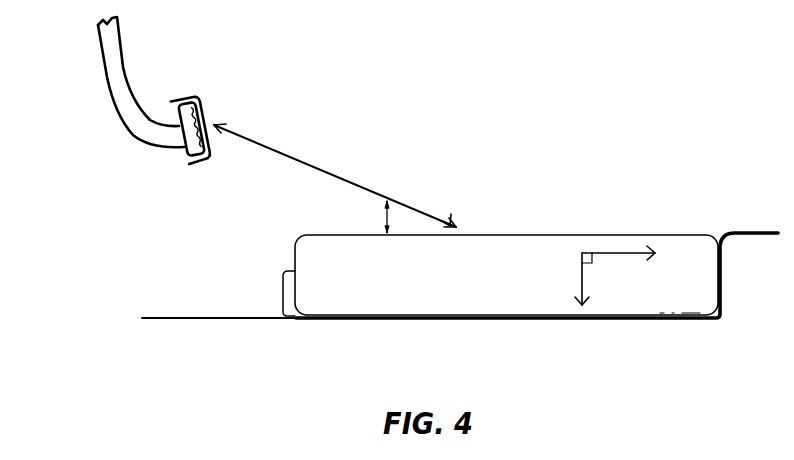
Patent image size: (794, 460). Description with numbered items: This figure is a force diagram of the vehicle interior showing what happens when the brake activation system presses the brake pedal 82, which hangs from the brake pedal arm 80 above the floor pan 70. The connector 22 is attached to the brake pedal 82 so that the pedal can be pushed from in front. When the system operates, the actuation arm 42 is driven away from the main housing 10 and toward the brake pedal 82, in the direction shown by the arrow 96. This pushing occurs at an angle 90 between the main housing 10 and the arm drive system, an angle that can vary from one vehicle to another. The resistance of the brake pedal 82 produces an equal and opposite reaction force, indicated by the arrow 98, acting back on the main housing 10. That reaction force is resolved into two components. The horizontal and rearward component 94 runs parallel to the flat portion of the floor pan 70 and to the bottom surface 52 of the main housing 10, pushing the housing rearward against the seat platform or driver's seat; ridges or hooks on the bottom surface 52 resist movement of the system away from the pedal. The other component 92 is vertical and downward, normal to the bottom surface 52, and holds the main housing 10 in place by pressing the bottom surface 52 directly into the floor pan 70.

The main housing 10 is at (693, 235).
The connector 22 is at (170, 98).
The actuation arm 42 is at (321, 168).
The bottom surface 52 is at (317, 320).
The floor pan 70 is at (187, 316).
The brake pedal arm 80 is at (108, 61).
The brake pedal 82 is at (186, 152).
The angle 90 is at (385, 217).
The downward direction arrow 92 is at (578, 279).
The horizontal and rearward component 94 is at (637, 254).
The arrow 96 is at (217, 112).
The arrow 98 is at (450, 226).